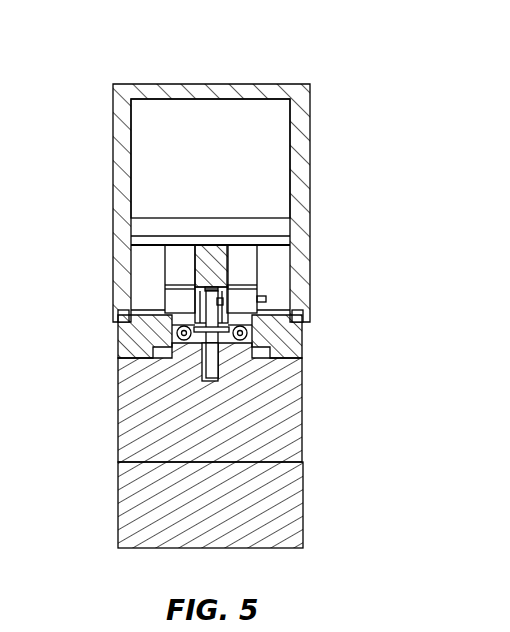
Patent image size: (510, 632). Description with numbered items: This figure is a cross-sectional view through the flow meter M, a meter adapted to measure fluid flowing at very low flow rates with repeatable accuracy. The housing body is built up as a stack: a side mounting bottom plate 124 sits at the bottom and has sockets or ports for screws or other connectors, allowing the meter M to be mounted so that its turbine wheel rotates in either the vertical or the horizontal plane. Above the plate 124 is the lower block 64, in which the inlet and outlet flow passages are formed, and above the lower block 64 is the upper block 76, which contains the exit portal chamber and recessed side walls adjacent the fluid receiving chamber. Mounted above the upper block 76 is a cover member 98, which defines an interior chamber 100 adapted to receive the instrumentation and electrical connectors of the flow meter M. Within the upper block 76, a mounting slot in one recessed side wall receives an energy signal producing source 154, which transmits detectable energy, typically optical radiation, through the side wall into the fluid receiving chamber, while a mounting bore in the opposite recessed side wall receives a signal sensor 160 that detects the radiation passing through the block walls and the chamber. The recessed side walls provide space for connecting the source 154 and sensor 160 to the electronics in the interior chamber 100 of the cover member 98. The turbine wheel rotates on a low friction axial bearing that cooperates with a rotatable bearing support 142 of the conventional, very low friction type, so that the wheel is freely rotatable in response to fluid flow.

The flow meter M is at (275, 40).
The cover member 98 is at (300, 148).
The interior chamber 100 is at (235, 172).
The energy signal producing source 154 is at (160, 296).
The signal sensor 160 is at (262, 293).
The upper block 76 is at (293, 338).
The rotatable bearing support 142 is at (181, 347).
The lower block 64 is at (290, 403).
The side mounting bottom plate 124 is at (290, 488).